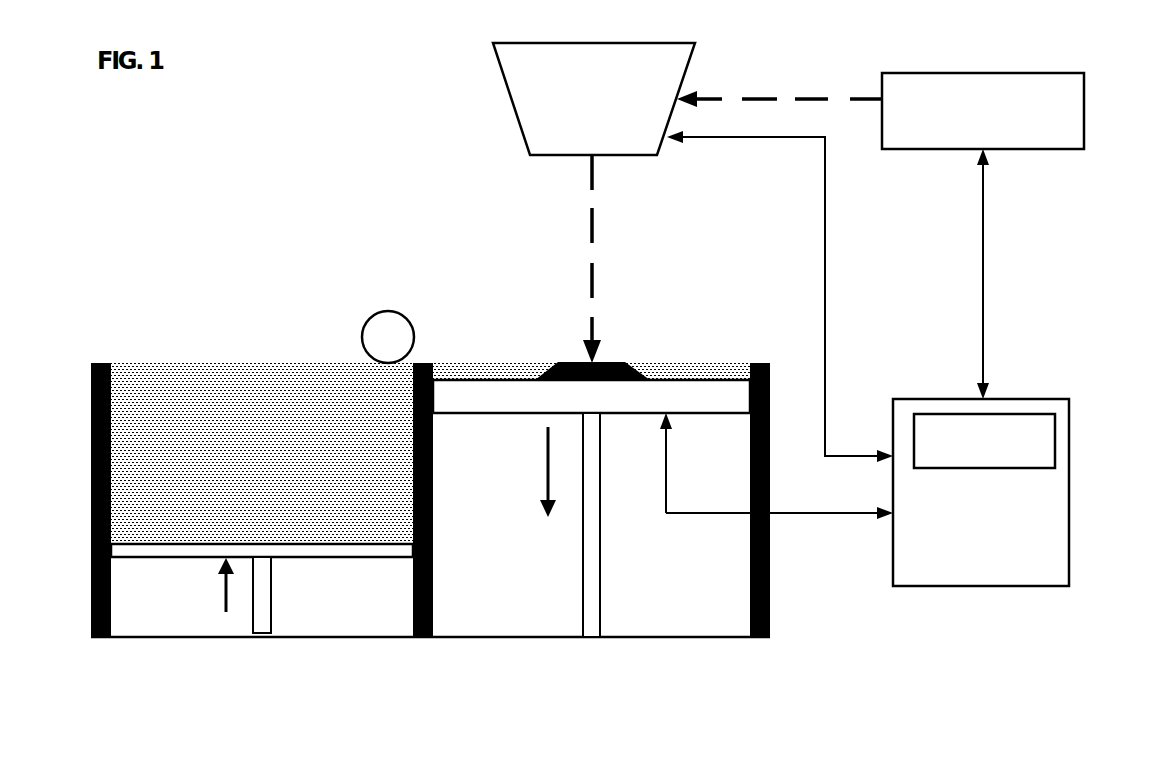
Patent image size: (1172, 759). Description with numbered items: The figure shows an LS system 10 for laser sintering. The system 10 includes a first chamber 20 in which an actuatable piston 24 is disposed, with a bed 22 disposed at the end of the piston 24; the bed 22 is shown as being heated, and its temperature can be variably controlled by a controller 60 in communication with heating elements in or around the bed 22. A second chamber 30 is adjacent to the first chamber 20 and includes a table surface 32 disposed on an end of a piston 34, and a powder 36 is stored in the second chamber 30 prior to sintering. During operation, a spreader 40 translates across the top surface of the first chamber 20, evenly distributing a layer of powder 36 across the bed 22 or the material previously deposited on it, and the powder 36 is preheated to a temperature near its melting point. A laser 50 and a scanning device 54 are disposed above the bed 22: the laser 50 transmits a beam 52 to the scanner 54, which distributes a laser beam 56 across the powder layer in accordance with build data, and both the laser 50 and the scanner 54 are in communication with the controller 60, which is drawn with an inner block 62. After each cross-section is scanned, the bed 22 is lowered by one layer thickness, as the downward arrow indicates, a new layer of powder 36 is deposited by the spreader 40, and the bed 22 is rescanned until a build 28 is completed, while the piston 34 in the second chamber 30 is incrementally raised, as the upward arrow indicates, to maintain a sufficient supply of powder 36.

The LS system 10 is at (340, 94).
The first chamber 20 is at (507, 598).
The bed 22 is at (470, 398).
The piston 24 is at (600, 605).
The build 28 is at (560, 363).
The second chamber 30 is at (170, 615).
The table surface 32 is at (347, 550).
The piston 34 is at (272, 598).
The powder 36 is at (170, 380).
The spreader 40 is at (365, 318).
The laser 50 is at (1050, 73).
The beam 52 is at (750, 99).
The scanning device 54 is at (602, 43).
The laser beam 56 is at (593, 268).
The controller 60 is at (1028, 399).
The display 62 is at (1030, 457).